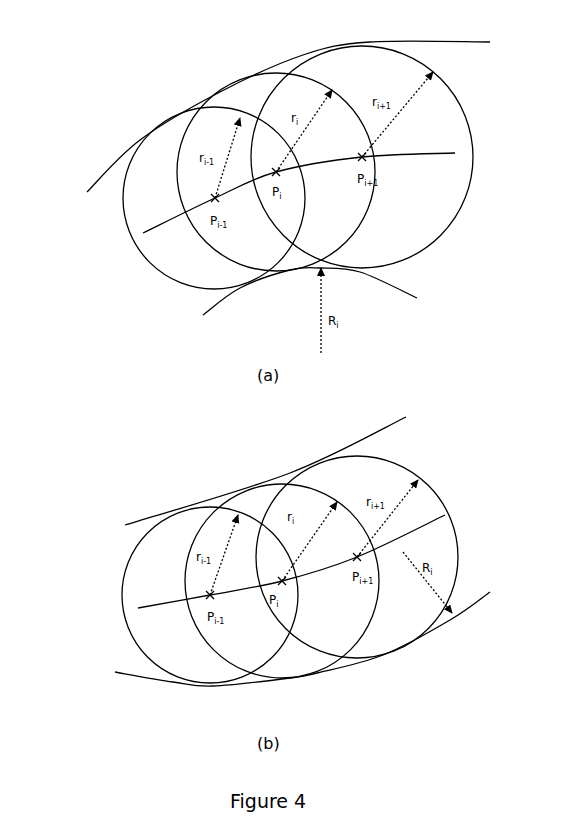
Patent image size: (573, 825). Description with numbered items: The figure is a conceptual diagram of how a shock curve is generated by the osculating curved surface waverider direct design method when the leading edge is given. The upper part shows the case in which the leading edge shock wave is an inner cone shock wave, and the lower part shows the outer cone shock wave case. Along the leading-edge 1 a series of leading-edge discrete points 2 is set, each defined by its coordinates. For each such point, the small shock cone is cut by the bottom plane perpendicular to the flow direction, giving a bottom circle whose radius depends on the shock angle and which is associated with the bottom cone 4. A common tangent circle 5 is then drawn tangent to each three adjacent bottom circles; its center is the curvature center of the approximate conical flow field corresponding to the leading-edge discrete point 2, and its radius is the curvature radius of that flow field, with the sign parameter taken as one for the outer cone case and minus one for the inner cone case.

The leading-edge 1 is at (188, 211).
The leading-edge discrete point 2 is at (208, 195).
The bottom cone 4 is at (212, 100).
The common tangent circle 5 is at (222, 302).